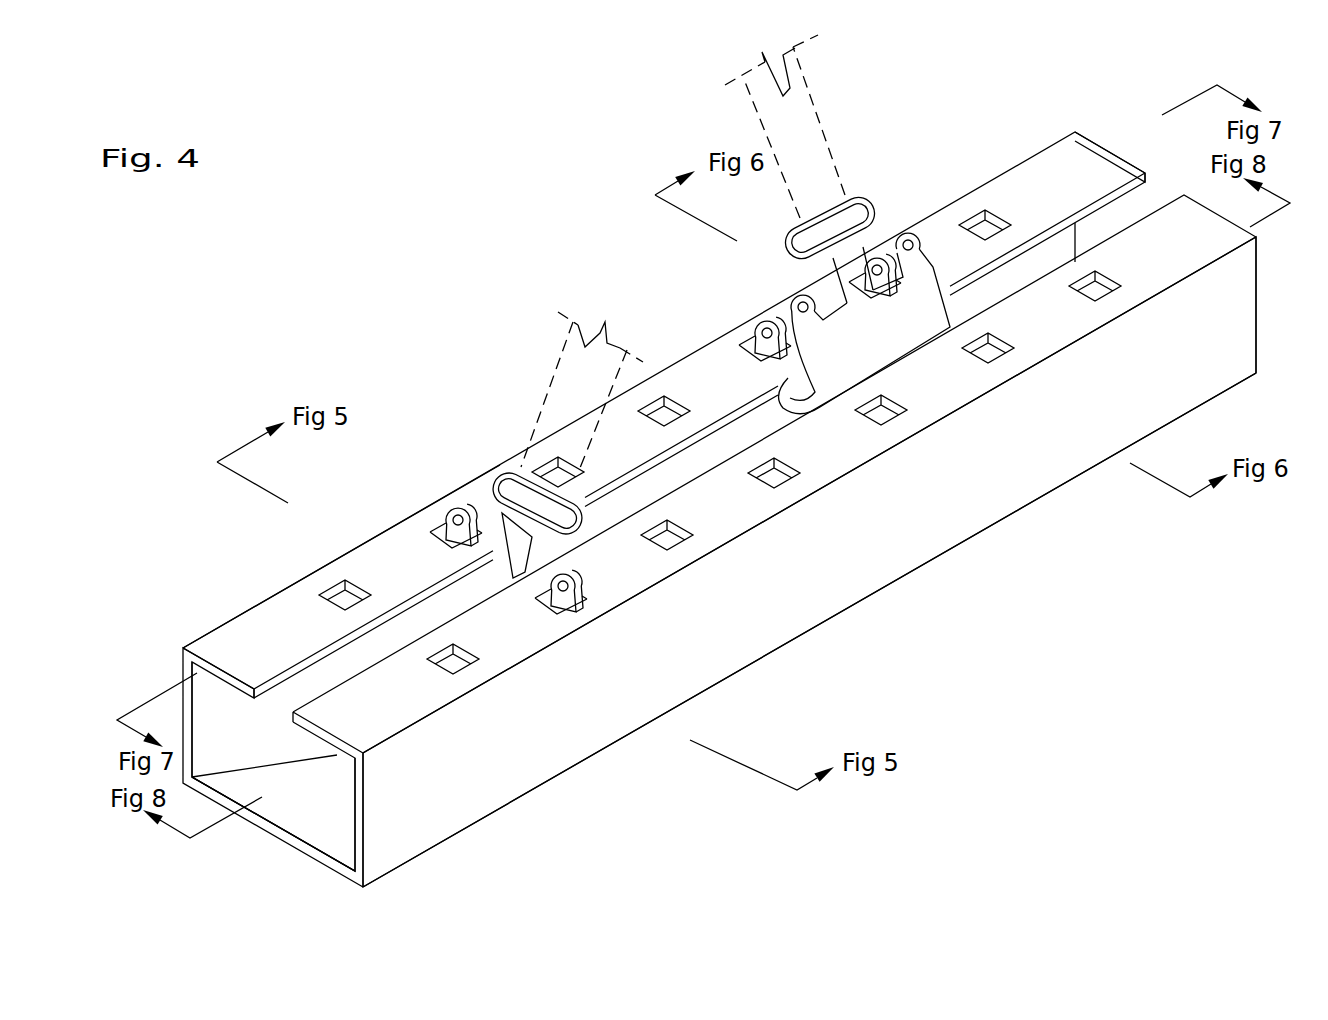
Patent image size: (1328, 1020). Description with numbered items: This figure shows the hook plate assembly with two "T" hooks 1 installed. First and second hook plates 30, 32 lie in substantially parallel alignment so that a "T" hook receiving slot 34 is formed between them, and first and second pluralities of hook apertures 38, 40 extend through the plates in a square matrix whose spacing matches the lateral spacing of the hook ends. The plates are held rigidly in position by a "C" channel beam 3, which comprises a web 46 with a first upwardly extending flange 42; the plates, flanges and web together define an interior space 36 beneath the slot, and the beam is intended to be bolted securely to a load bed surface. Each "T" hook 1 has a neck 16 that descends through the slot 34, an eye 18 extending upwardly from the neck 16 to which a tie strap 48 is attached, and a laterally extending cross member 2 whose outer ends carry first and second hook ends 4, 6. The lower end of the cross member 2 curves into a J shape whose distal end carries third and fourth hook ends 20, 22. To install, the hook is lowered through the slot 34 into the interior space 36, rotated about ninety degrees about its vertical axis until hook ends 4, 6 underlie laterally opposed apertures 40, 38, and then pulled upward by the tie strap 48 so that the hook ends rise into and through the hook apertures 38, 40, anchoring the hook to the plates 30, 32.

The "T" hook 1 is at (679, 457).
The laterally extending cross member 2 is at (674, 518).
The "C" channel beam 3 is at (774, 541).
The first hook end 4 is at (577, 593).
The second hook end 6 is at (447, 530).
The neck 16 is at (509, 558).
The eye 18 is at (790, 252).
The third hook end 20 is at (755, 340).
The fourth hook end 22 is at (913, 298).
The first hook plate 30 is at (270, 635).
The second hook plate 32 is at (1045, 322).
The "T" hook receiving slot 34 is at (1157, 197).
The interior space 36 is at (337, 830).
The first plurality of hook apertures 38 is at (343, 597).
The second plurality of hook apertures 40 is at (682, 543).
The first upwardly extending flange 42 is at (592, 706).
The web 46 is at (262, 826).
The tie strap 48 is at (790, 110).